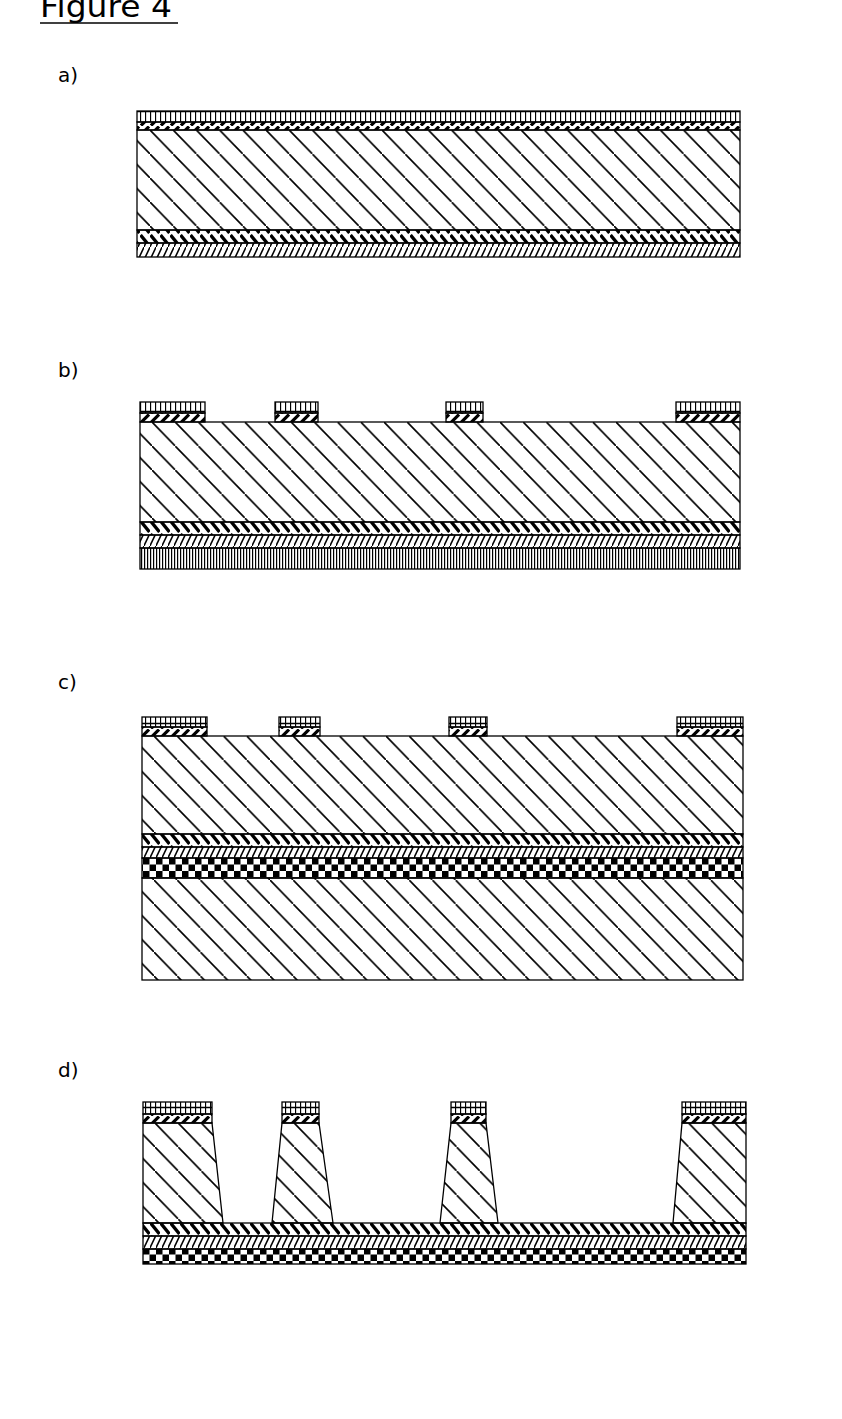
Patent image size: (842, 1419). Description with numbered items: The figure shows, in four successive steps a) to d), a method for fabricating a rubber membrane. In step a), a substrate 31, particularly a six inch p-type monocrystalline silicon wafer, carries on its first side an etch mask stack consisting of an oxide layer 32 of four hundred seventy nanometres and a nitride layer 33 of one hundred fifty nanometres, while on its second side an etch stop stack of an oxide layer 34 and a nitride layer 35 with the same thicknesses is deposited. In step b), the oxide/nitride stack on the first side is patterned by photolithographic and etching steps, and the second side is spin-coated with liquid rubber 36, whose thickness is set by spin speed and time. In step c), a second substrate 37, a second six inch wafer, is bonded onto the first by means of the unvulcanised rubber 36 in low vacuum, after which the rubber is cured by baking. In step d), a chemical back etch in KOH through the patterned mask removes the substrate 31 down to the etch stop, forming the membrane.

The substrate 31 is at (265, 207).
The oxide layer 32 is at (137, 126).
The nitride layer 33 is at (455, 111).
The oxide layer 34 is at (140, 237).
The nitride layer 35 is at (467, 257).
The liquid rubber 36 is at (152, 568).
The second substrate 37 is at (192, 938).